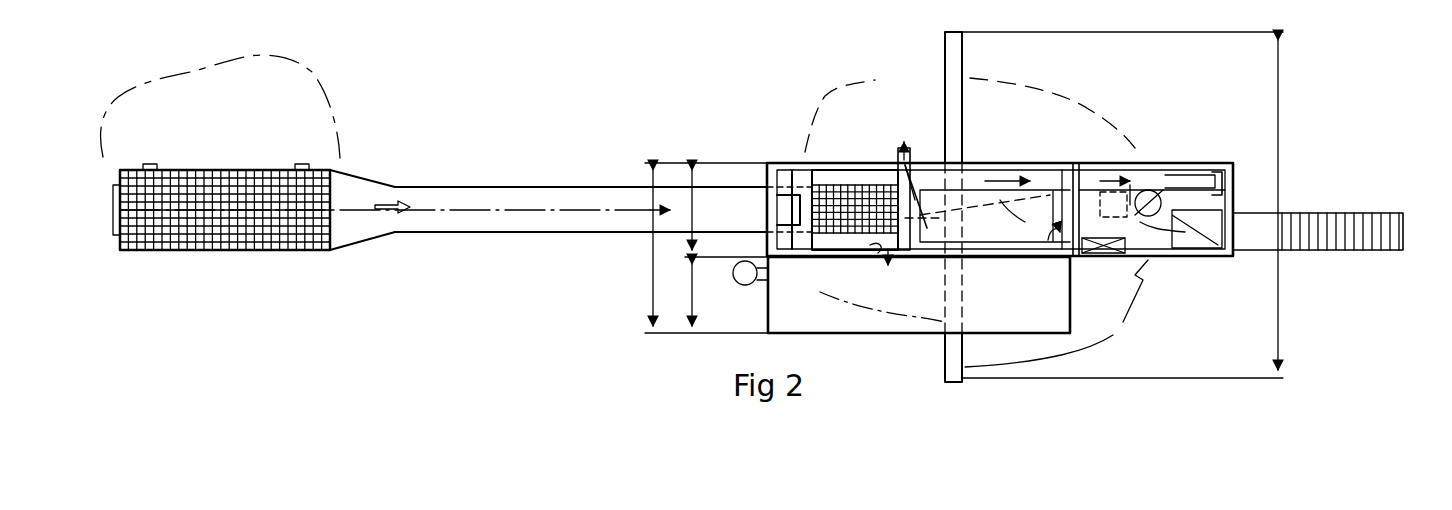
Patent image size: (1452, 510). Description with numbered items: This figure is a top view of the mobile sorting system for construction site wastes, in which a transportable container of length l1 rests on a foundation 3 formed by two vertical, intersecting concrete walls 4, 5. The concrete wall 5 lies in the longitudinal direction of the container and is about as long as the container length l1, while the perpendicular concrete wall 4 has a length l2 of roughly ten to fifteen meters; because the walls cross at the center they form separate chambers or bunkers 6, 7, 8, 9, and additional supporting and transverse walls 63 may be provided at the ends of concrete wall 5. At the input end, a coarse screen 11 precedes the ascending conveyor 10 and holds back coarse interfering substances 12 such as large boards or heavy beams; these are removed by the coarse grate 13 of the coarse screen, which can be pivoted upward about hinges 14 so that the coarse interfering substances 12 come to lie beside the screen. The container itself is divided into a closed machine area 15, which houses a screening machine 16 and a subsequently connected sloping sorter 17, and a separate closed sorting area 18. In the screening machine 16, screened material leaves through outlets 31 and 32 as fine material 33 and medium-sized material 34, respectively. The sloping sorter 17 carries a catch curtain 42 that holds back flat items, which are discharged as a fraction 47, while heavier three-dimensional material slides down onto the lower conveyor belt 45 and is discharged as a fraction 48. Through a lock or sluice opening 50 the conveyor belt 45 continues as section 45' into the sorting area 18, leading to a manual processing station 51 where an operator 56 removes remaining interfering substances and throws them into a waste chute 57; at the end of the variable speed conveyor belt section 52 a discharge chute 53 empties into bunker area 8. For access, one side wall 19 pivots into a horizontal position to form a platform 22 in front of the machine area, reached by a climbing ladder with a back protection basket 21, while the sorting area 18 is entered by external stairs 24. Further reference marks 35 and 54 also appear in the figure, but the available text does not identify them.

The foundation 3 is at (922, 77).
The concrete wall 4 is at (965, 52).
The concrete wall 5 is at (1172, 232).
The bunker 6 is at (839, 111).
The bunker 7 is at (882, 300).
The bunker area 8 is at (1046, 130).
The bunker 9 is at (1056, 313).
The ascending conveyor 10 is at (470, 187).
The coarse screen 11 is at (210, 258).
The coarse interfering substances 12 is at (305, 90).
The coarse grate 13 is at (139, 240).
The hinges 14 is at (148, 164).
The machine area 15 is at (786, 166).
The screening machine 16 is at (825, 250).
The sloping sorter 17 is at (978, 225).
The sorting area 18 is at (1185, 234).
The side wall 19 is at (772, 318).
The back protection basket 21 is at (733, 272).
The platform 22 is at (898, 337).
The external stairs 24 is at (1316, 212).
The outlet 31 is at (900, 152).
The outlet 32 is at (863, 260).
The fine material 33 is at (918, 138).
The medium-sized material 34 is at (922, 255).
The lever 35 is at (930, 203).
The catch curtain 42 is at (985, 216).
The conveyor belt 45 is at (1067, 155).
The conveyor belt section 45' is at (1116, 140).
The fraction 47 is at (1052, 225).
The fraction 48 is at (1014, 175).
The sluice opening 50 is at (1070, 178).
The manual processing station 51 is at (1150, 182).
The variable speed conveyor belt section 52 is at (1185, 180).
The discharge chute 53 is at (1226, 180).
The direction arrow 54 is at (385, 187).
The operator 56 is at (1197, 223).
The waste chute 57 is at (1124, 222).
The supporting and transverse walls 63 is at (765, 178).
The length of container l1 is at (706, 248).
The length of concrete wall l2 is at (1122, 205).